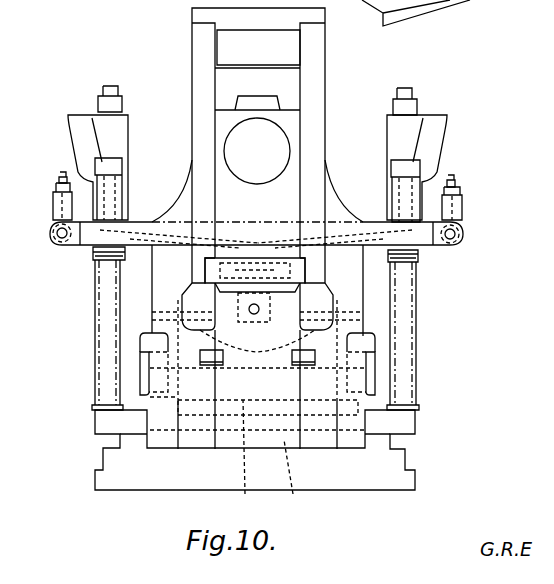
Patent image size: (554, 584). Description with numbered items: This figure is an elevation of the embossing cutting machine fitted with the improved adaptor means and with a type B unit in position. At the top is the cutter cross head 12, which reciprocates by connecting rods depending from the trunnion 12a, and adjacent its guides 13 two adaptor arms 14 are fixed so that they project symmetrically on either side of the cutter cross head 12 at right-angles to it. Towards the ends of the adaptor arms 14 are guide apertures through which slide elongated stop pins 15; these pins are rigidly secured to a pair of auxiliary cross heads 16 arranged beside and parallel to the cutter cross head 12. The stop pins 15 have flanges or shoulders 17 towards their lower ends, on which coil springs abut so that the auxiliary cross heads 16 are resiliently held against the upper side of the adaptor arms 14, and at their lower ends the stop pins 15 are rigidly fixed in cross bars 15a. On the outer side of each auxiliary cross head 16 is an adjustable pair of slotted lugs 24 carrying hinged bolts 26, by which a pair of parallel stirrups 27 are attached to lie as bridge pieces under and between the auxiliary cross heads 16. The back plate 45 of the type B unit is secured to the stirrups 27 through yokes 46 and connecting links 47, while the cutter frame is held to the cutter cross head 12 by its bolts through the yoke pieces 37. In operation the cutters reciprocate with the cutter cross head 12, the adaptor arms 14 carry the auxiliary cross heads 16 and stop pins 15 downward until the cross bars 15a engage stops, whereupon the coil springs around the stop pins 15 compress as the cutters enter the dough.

The cutter cross head 12 is at (292, 120).
The trunnion 12a is at (257, 151).
The guides 13 is at (325, 52).
The adaptor arms 14 is at (151, 220).
The stop pins 15 is at (112, 346).
The cross bars 15a is at (132, 420).
The auxiliary cross heads 16 is at (117, 134).
The flanges or shoulders 17 is at (95, 406).
The slotted lugs 24 is at (53, 207).
The hinged bolts 26 is at (62, 176).
The stirrups 27 is at (140, 252).
The yoke pieces 37 is at (150, 307).
The back plate 45 is at (297, 479).
The yokes 46 is at (245, 459).
The connecting links 47 is at (305, 300).